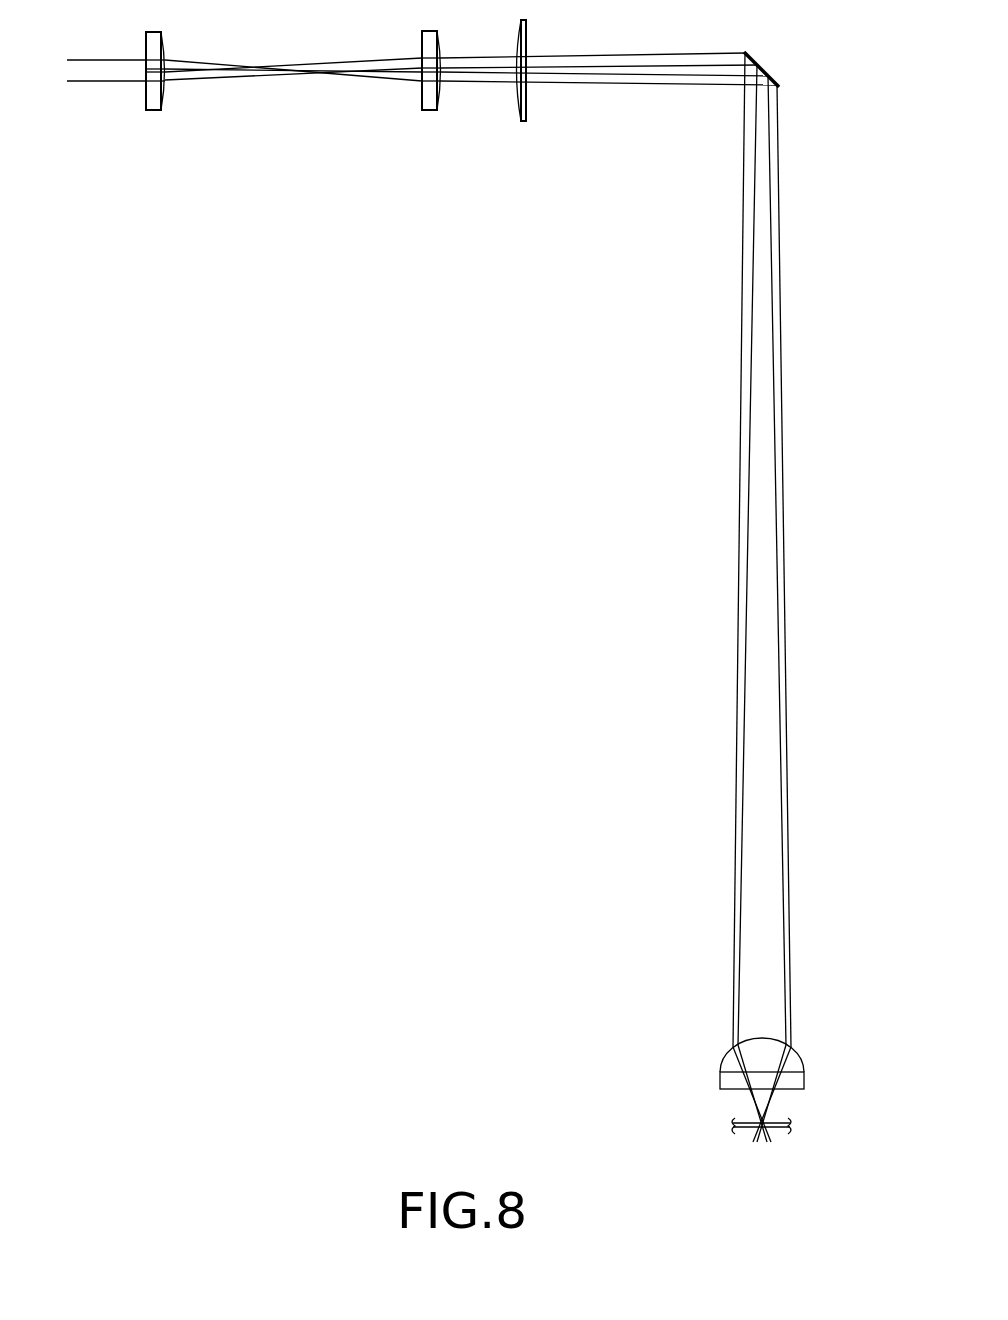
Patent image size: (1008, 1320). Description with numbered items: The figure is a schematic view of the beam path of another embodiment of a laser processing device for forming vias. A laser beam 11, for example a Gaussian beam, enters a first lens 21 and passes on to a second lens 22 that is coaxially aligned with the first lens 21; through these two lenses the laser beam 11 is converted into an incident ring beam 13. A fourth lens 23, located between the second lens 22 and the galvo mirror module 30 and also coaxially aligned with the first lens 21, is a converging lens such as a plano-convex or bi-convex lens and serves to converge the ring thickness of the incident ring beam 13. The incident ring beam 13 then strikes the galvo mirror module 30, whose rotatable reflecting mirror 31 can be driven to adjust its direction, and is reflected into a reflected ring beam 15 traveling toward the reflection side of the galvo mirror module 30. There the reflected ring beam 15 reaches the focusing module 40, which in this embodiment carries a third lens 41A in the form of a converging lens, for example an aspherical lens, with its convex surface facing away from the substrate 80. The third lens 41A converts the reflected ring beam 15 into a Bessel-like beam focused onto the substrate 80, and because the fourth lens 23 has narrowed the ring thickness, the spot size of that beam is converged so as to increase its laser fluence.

The laser beam 11 is at (93, 83).
The first lens 21 is at (152, 111).
The second lens 22 is at (430, 111).
The fourth lens 23 is at (523, 122).
The incident ring beam 13 is at (652, 86).
The galvo mirror module 30 is at (764, 50).
The reflecting mirror 31 is at (778, 78).
The reflected ring beam 15 is at (742, 287).
The focusing module 40 is at (799, 1081).
The third lens 41A is at (790, 1084).
The substrate 80 is at (777, 1129).